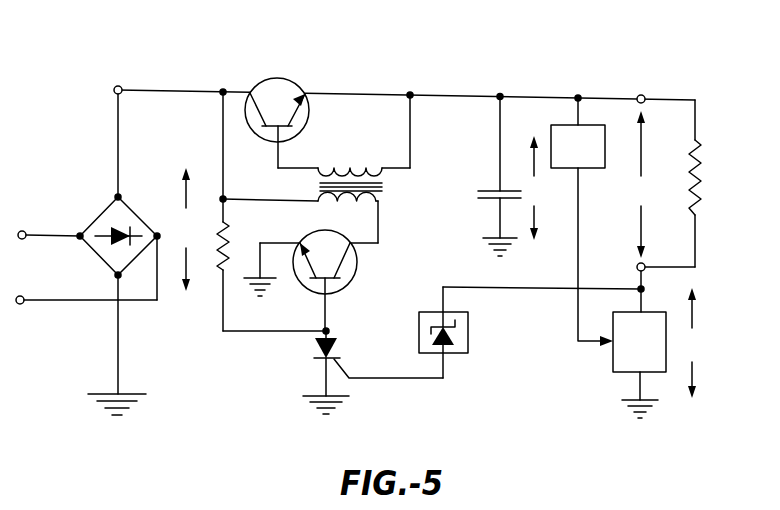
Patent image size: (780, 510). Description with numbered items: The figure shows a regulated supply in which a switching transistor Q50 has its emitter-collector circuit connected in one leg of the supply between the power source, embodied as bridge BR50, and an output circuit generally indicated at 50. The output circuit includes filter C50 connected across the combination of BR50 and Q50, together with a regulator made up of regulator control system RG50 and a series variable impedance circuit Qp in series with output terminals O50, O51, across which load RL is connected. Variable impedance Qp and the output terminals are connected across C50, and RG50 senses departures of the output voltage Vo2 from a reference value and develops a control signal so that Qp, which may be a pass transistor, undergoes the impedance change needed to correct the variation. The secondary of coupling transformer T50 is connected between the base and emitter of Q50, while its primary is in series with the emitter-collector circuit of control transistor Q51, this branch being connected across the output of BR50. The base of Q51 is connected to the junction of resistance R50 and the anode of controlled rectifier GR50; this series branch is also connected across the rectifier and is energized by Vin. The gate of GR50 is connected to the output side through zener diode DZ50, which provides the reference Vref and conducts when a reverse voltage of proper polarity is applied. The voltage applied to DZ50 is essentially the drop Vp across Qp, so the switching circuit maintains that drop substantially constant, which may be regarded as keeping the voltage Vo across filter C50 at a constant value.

The output circuit 50 is at (586, 56).
The input voltage Vin is at (153, 181).
The bridge BR50 is at (88, 304).
The resistance R50 is at (231, 247).
The switching transistor Q50 is at (284, 118).
The coupling transformer T50 is at (387, 187).
The control transistor Q51 is at (311, 282).
The controlled rectifier GR50 is at (320, 358).
The zener diode DZ50 is at (449, 352).
The reference voltage Vref is at (494, 336).
The filter C50 is at (488, 176).
The voltage across filter Vo is at (533, 188).
The regulator control system RG50 is at (582, 222).
The output terminal O50 is at (655, 88).
The output voltage Vo2 is at (640, 184).
The load resistor RL is at (683, 183).
The output terminal O51 is at (655, 280).
The series variable impedance circuit Qp is at (639, 365).
The drop across series variable impedance Vp is at (691, 343).